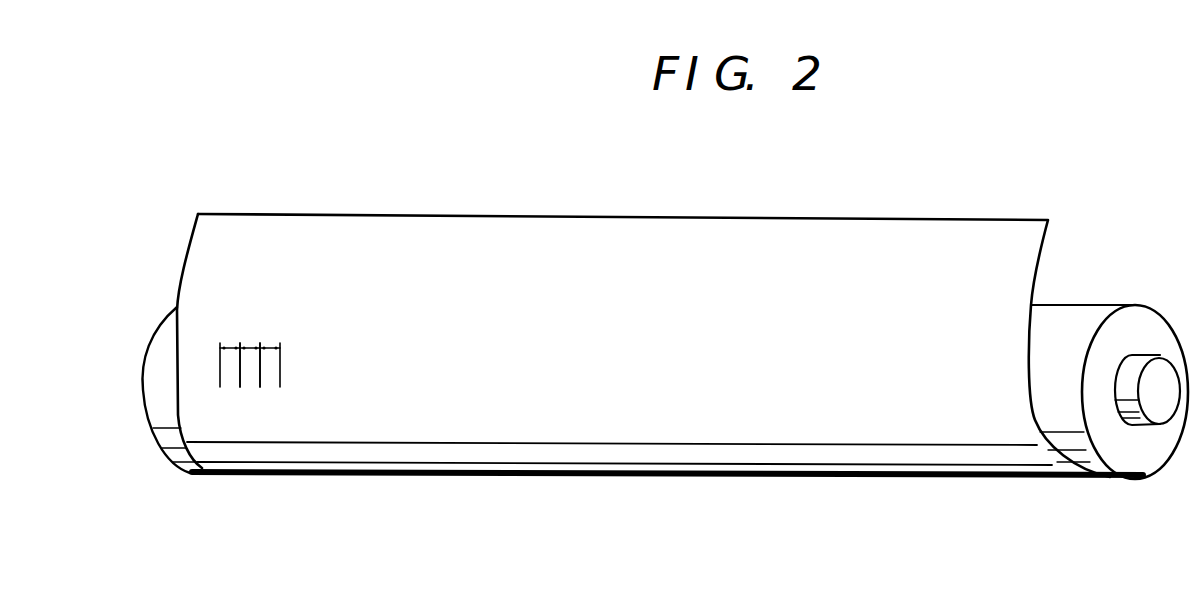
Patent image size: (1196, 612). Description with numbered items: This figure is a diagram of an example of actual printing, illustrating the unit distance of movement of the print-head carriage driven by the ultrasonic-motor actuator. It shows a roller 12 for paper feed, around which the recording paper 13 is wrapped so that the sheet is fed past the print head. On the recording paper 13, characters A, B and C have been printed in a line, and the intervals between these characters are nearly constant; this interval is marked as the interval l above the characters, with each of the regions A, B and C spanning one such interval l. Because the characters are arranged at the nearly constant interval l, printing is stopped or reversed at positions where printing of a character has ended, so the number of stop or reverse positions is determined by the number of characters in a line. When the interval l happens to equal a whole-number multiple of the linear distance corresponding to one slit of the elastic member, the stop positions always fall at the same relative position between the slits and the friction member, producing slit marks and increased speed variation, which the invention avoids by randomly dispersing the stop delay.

The roller 12 is at (1078, 320).
The recording paper 13 is at (1013, 237).
The interval l is at (250, 333).
The character A is at (230, 367).
The character B is at (250, 367).
The character C is at (270, 367).